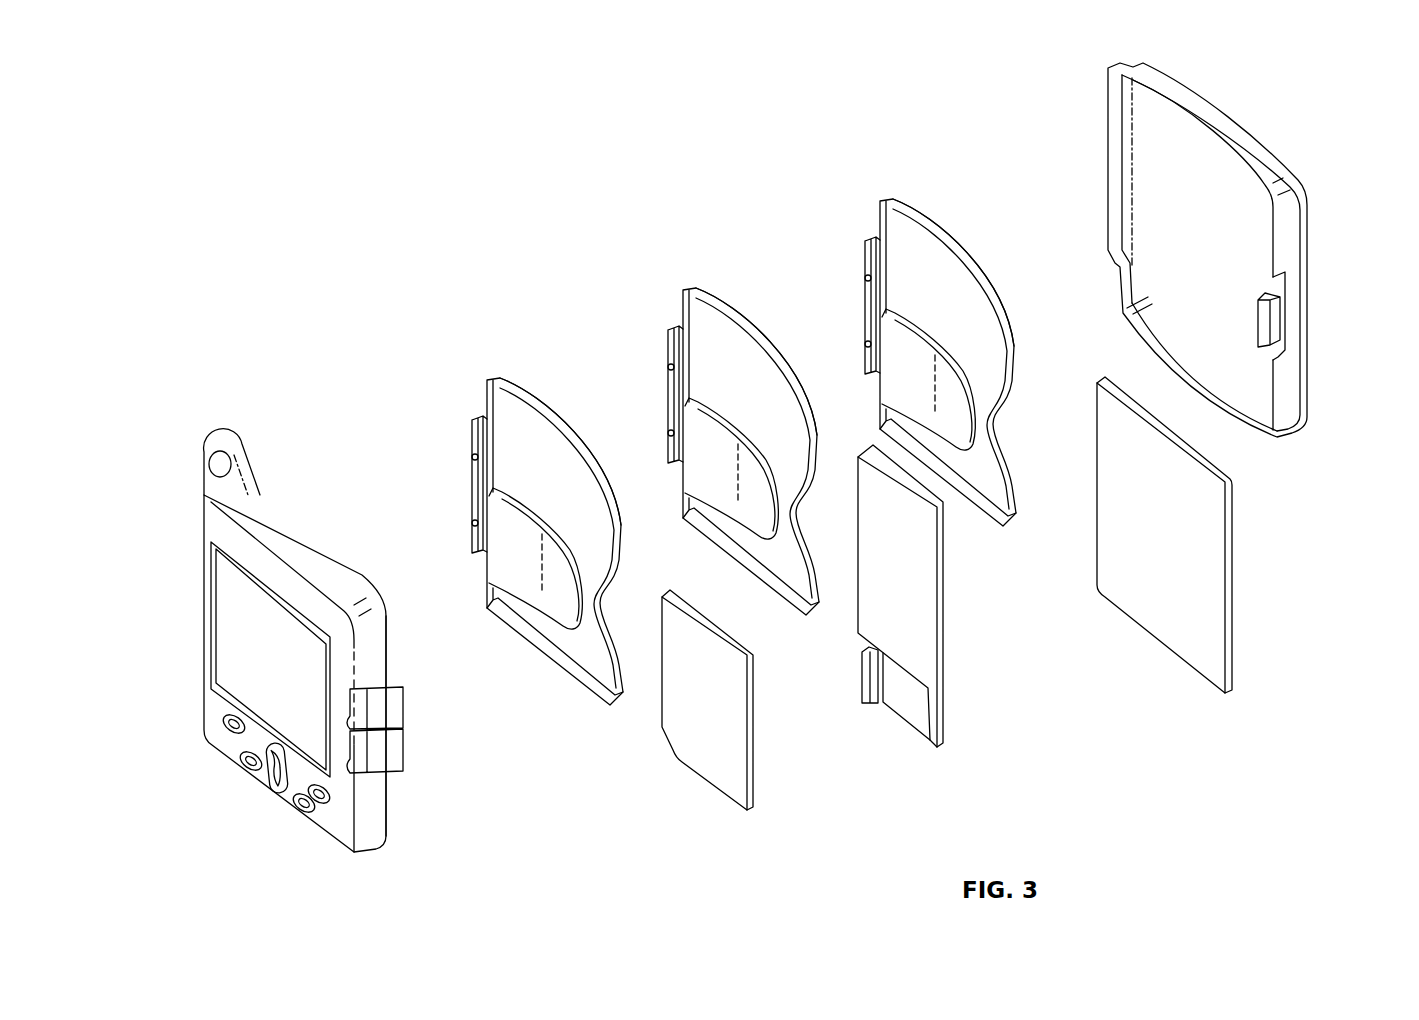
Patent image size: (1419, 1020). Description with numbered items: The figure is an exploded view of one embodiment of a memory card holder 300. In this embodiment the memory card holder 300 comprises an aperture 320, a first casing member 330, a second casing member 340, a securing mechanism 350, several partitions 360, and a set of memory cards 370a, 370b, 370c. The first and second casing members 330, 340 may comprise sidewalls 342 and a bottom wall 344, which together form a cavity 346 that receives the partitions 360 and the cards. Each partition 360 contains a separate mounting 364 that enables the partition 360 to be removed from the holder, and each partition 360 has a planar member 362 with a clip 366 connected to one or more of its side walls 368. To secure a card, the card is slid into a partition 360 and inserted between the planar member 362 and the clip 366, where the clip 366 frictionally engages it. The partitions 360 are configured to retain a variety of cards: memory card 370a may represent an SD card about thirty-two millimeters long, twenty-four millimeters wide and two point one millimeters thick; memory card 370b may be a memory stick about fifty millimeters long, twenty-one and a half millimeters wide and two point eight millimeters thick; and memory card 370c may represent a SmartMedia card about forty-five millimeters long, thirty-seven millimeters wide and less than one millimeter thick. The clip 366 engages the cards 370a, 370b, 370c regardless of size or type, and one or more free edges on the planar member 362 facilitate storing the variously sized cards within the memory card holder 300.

The memory card holder 300 is at (333, 204).
The aperture 320 is at (210, 449).
The first casing member 330 is at (290, 518).
The second casing member 340 is at (1220, 122).
The sidewalls 342 is at (378, 640).
The bottom wall 344 is at (258, 556).
The cavity 346 is at (1083, 132).
The securing mechanism 350 is at (395, 755).
The partitions 360 is at (720, 453).
The planar member 362 is at (542, 439).
The mounting 364 is at (472, 439).
The clip 366 is at (507, 565).
The side walls 368 is at (490, 382).
The memory card 370a is at (750, 796).
The memory card 370b is at (948, 731).
The memory card 370c is at (1225, 669).